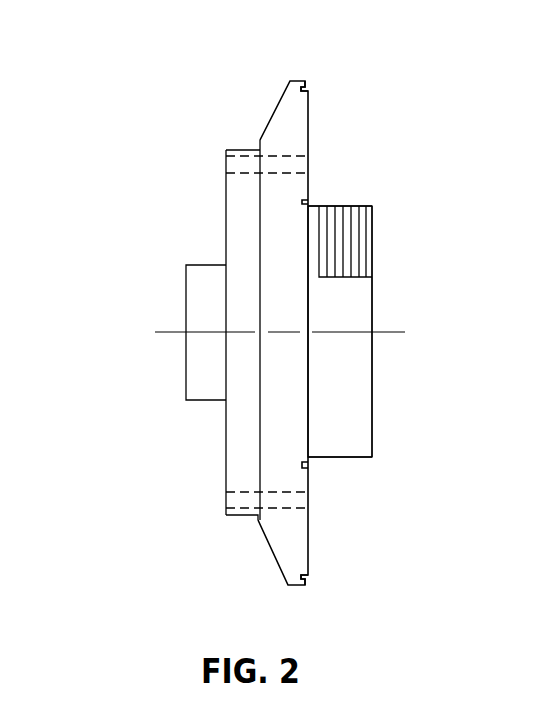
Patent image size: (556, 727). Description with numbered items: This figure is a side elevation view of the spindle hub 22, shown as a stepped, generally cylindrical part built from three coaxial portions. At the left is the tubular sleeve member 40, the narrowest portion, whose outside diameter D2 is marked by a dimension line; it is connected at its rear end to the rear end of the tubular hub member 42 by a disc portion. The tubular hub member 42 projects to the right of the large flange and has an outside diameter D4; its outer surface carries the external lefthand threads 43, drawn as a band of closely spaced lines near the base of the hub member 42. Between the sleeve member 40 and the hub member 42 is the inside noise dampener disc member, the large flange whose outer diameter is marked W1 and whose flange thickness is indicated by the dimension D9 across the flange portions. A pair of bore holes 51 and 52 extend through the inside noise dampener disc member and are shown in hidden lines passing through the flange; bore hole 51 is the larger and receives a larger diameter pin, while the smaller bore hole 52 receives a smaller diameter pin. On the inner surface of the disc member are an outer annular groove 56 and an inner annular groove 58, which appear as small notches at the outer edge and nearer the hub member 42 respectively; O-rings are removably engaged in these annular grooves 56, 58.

The spindle hub 22 is at (382, 134).
The tubular sleeve member 40 is at (183, 360).
The tubular hub member 42 is at (342, 388).
The external lefthand threads 43 is at (353, 242).
The bore hole 51 is at (224, 504).
The bore hole 52 is at (227, 164).
The outer annular groove 56 is at (310, 87).
The inner annular groove 58 is at (308, 203).
The outside diameter of tubular sleeve member D2 is at (178, 400).
The outside diameter of tubular hub member D4 is at (382, 208).
The flange diameter D9 is at (226, 513).
The outer diameter of inside noise dampener disc member W1 is at (313, 81).